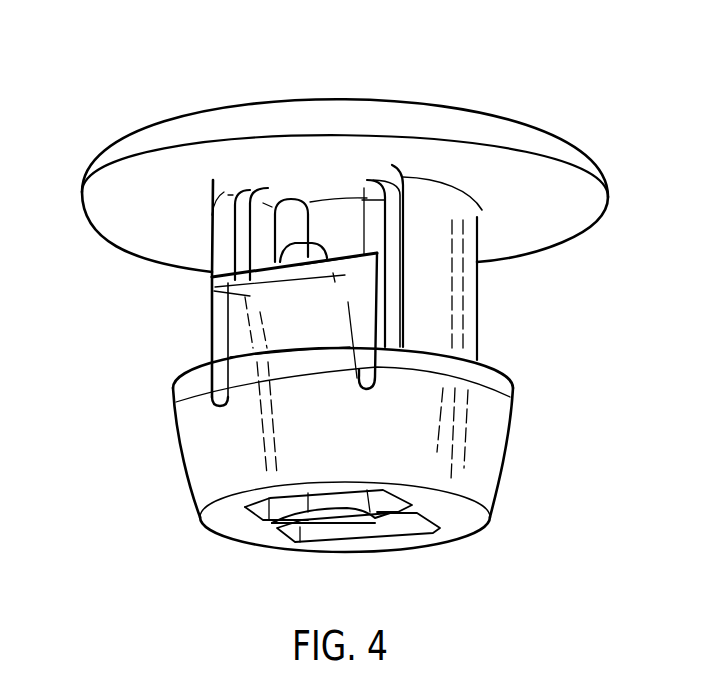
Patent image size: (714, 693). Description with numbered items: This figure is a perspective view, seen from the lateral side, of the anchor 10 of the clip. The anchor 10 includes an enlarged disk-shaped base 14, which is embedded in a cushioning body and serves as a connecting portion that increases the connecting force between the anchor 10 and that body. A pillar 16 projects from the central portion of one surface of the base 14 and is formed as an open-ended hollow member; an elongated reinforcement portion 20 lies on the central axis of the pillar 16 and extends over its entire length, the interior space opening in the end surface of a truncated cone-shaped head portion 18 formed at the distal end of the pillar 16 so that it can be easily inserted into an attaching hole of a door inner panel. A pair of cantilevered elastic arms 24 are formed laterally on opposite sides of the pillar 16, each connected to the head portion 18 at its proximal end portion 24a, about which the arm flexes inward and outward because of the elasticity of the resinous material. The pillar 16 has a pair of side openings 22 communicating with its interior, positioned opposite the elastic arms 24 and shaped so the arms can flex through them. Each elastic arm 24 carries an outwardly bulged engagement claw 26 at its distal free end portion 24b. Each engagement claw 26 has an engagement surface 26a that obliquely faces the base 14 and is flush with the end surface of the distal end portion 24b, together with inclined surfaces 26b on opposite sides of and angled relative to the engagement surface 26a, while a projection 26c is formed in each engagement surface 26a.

The anchor 10 is at (100, 108).
The base 14 is at (500, 130).
The pillar 16 is at (447, 305).
The head portion 18 is at (478, 447).
The reinforcement portion 20 is at (344, 520).
The side openings 22 is at (258, 234).
The elastic arms 24 is at (238, 336).
The proximal end portions 24a is at (243, 390).
The distal end portions 24b is at (210, 280).
The engagement claws 26 is at (236, 299).
The engagement surfaces 26a is at (337, 256).
The inclined surfaces 26b is at (285, 303).
The projections 26c is at (297, 243).